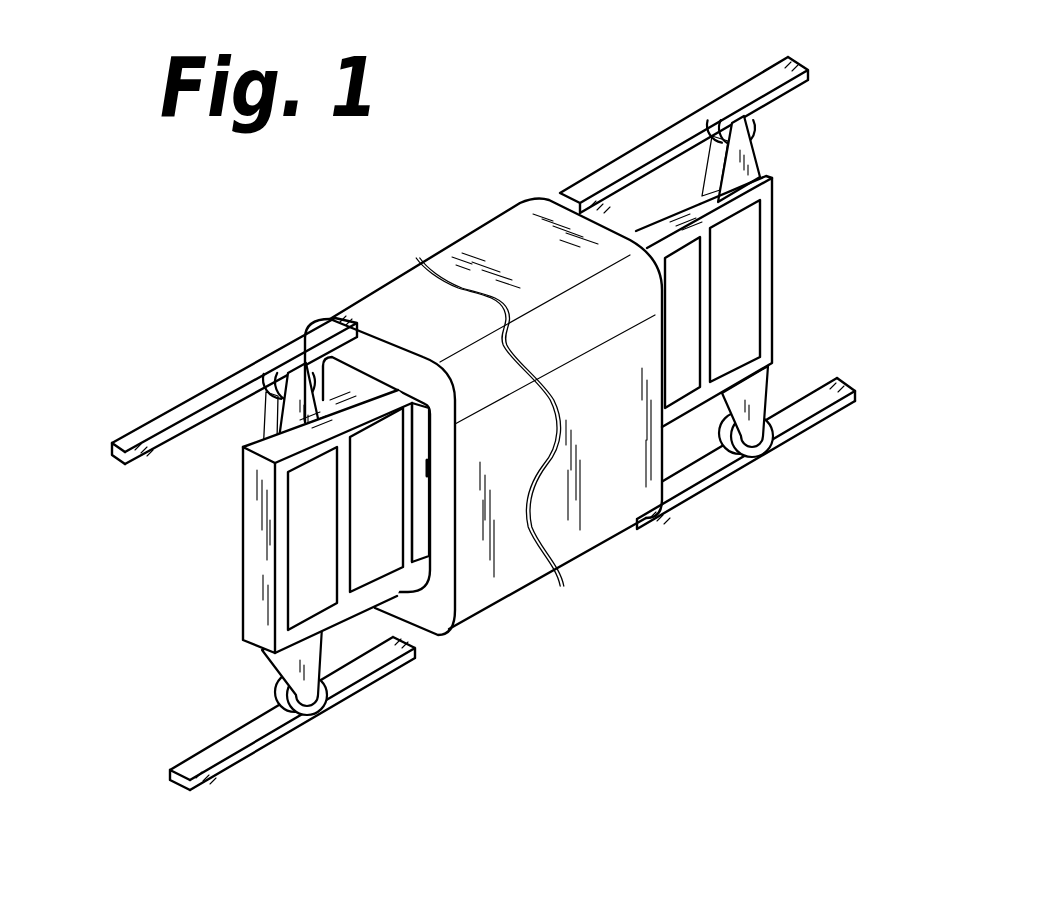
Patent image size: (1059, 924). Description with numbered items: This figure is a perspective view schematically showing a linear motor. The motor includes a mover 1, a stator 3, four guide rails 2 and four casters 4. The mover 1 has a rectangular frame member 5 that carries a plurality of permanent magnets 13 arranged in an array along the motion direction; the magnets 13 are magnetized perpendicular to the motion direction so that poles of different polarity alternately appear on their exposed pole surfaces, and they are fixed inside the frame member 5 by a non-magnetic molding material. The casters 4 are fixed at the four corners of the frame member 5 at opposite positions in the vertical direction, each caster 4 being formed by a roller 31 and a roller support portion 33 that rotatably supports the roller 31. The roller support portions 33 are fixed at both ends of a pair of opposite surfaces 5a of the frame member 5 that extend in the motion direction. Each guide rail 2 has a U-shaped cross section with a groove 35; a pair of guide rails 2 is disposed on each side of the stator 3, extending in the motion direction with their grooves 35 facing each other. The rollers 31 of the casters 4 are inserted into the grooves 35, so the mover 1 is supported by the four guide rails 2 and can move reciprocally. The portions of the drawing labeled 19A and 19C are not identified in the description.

The mover 1 is at (472, 446).
The guide rail 2 is at (472, 453).
The stator 3 is at (493, 413).
The caster 4 is at (516, 411).
The frame member 5 is at (518, 426).
The opposite surfaces of the frame member 5a is at (646, 236).
The permanent magnet 13 is at (323, 583).
The side plate of yoke 19A is at (620, 538).
The end frame of yoke 19C is at (481, 626).
The roller 31 is at (298, 373).
The roller support portion 33 is at (288, 441).
The groove 35 is at (114, 454).